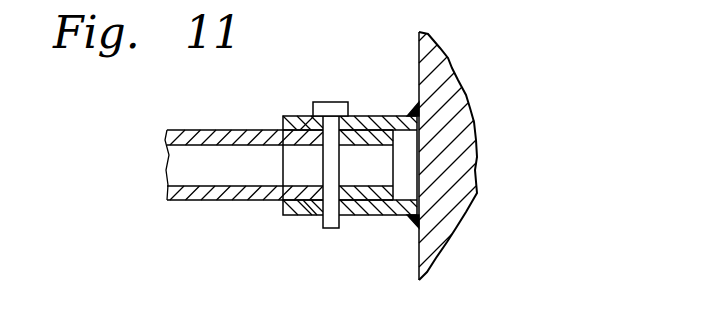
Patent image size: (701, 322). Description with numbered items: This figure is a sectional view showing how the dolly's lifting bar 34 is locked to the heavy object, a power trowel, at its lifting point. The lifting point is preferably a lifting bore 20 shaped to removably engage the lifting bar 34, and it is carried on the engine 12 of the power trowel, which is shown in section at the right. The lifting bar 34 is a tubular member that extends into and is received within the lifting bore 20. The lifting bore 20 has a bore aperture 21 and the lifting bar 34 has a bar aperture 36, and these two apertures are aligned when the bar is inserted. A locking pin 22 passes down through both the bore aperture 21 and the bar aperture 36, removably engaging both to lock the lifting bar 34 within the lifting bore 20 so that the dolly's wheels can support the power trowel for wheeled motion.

The engine 12 is at (460, 100).
The lifting point 20 is at (377, 116).
The bore aperture 21 is at (296, 118).
The locking pin 22 is at (332, 102).
The lifting bar 34 is at (213, 130).
The bar aperture 36 is at (296, 140).